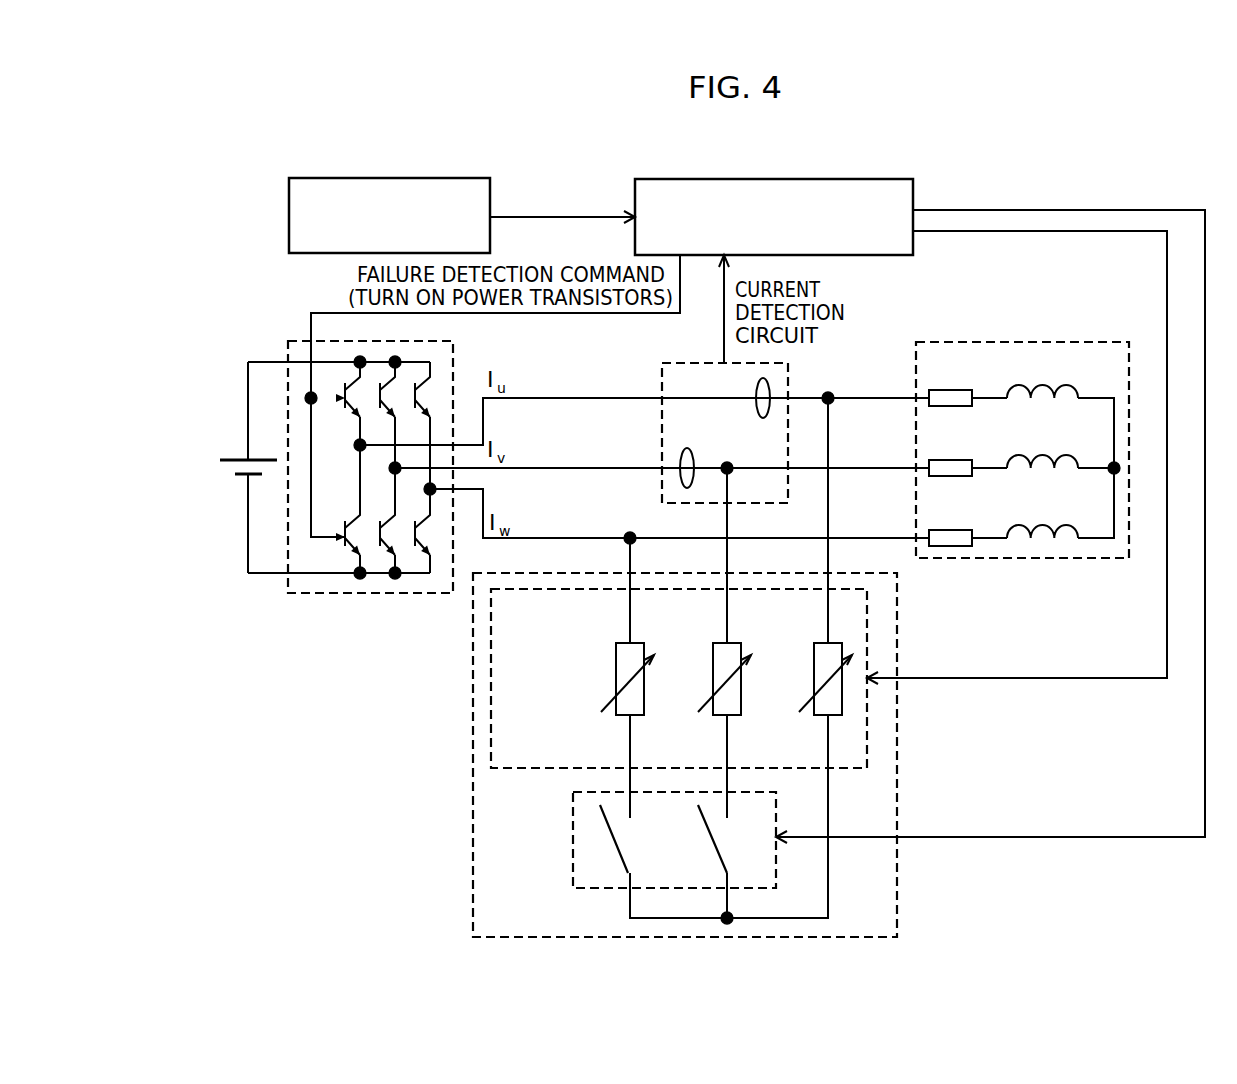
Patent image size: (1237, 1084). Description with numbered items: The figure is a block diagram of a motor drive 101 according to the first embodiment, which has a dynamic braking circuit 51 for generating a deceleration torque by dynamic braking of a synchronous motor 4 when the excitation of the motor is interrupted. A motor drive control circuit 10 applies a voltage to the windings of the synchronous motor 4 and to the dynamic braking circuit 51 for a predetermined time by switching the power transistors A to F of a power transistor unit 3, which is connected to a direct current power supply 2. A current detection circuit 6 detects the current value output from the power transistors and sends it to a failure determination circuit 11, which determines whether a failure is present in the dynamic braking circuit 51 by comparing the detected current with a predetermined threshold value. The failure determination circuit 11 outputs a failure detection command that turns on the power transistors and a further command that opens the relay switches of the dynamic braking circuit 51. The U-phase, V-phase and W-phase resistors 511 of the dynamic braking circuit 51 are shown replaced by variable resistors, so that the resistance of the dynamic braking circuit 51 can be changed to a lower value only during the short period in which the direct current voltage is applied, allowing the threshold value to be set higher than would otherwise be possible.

The motor drive 101 is at (953, 175).
The motor drive control circuit 10 is at (396, 178).
The failure determination circuit 11 is at (788, 179).
The direct current power supply 2 is at (232, 487).
The power transistor unit 3 is at (452, 378).
The synchronous motor 4 is at (1008, 342).
The current detection circuit 6 is at (662, 390).
The dynamic braking circuit 51 is at (689, 664).
The resistors 511 is at (490, 695).